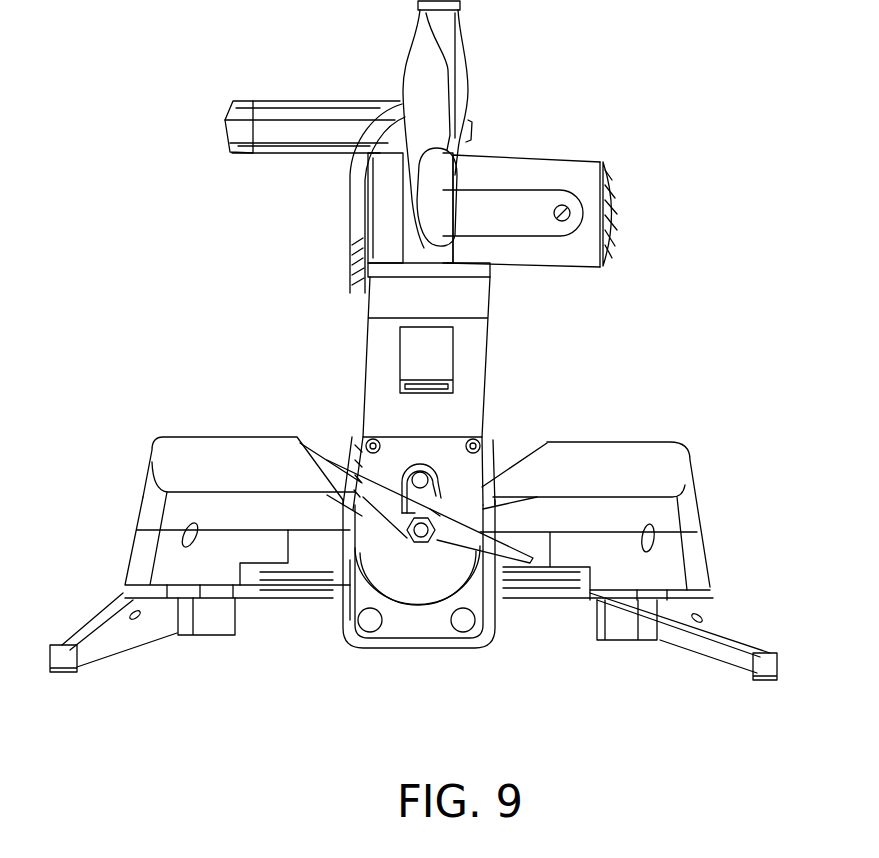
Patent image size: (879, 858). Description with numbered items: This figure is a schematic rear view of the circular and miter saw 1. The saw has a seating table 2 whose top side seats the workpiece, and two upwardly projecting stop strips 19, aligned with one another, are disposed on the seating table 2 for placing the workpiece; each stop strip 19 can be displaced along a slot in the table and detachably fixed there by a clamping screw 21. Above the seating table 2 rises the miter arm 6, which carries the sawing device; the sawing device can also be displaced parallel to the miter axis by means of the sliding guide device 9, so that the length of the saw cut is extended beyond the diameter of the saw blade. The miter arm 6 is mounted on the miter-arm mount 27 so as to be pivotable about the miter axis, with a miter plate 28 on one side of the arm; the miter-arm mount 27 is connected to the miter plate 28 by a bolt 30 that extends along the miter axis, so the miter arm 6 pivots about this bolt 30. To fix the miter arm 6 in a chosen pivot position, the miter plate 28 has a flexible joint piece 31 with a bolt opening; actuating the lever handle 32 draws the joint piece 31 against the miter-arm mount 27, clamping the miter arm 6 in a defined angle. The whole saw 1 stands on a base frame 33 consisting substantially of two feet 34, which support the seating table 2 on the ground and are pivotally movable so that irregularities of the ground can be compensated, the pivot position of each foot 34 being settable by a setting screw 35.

The circular and miter saw 1 is at (138, 317).
The seating table 2 is at (670, 553).
The miter arm 6 is at (500, 357).
The sliding guide device 9 is at (346, 662).
The stop strips 19 is at (625, 463).
The clamping screw 21 is at (653, 535).
The miter-arm mount 27 is at (420, 612).
The miter plate 28 is at (377, 468).
The bolt 30 is at (447, 483).
The joint piece 31 is at (452, 468).
The lever handle 32 is at (440, 492).
The base frame 33 is at (128, 640).
The feet 34 is at (713, 650).
The setting screw 35 is at (713, 600).